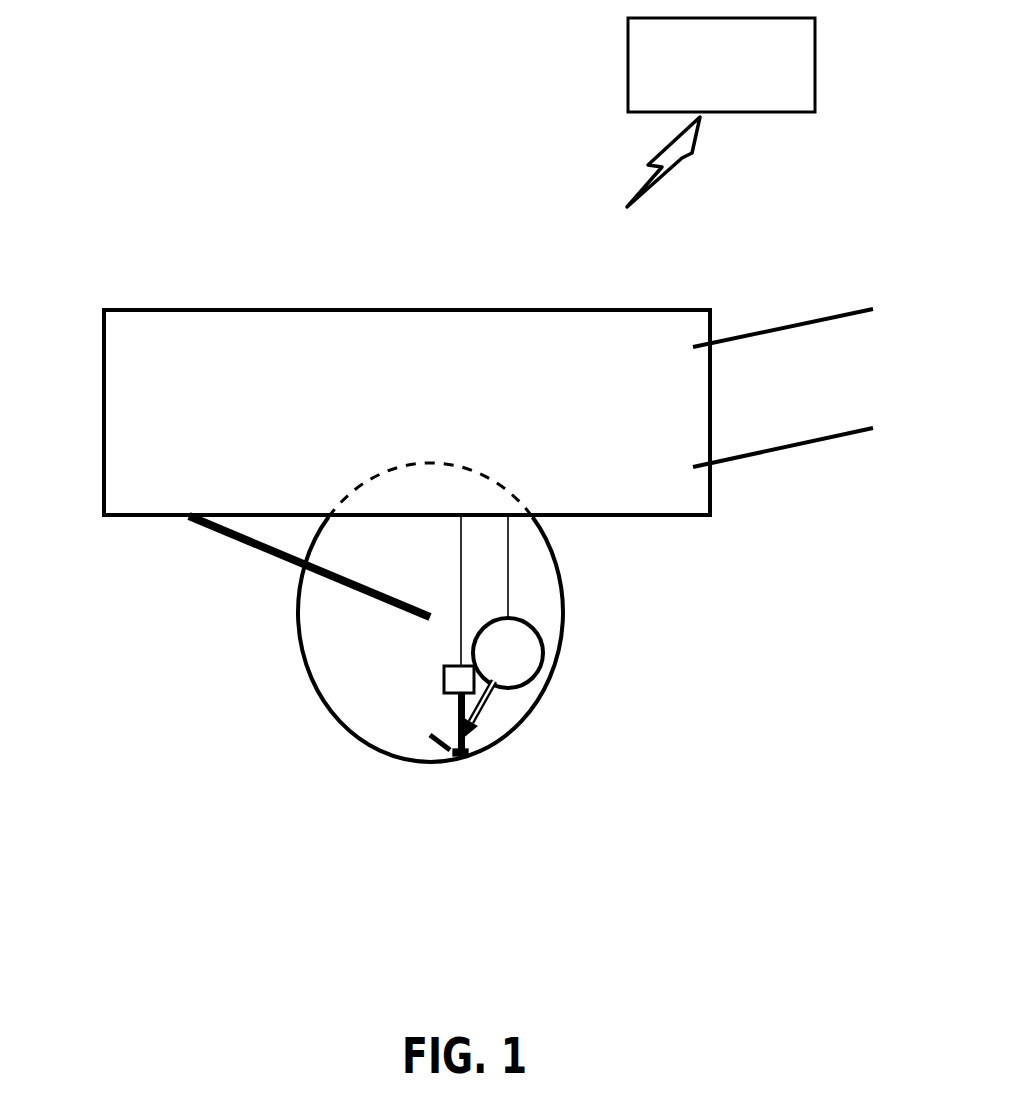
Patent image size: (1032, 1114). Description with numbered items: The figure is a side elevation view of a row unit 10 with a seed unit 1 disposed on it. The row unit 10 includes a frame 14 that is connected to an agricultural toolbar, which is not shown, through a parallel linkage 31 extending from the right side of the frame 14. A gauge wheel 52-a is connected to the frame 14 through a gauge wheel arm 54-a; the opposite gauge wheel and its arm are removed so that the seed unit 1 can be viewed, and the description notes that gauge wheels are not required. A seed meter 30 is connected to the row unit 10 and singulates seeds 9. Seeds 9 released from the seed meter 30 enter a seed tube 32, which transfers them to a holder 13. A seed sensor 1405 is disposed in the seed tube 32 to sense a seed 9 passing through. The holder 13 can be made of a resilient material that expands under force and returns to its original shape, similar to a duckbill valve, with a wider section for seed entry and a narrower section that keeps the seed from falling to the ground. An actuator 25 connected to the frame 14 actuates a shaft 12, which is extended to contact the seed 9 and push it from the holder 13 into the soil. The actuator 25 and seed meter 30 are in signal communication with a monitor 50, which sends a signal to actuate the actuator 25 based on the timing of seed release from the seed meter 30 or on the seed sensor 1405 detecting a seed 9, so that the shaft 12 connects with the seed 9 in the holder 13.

The monitor 50 is at (817, 42).
The row unit 10 is at (127, 176).
The frame 14 is at (375, 308).
The parallel linkage 31 is at (779, 303).
The gauge wheel arm 54-a is at (218, 538).
The gauge wheel 52-a is at (557, 568).
The seed meter 30 is at (545, 655).
The seed tube 32 is at (484, 717).
The actuator 25 is at (443, 690).
The shaft 12 is at (430, 735).
The holder 13 is at (449, 752).
The seed 9 is at (459, 757).
The seed sensor 1405 is at (467, 755).
The seed unit 1 is at (644, 812).